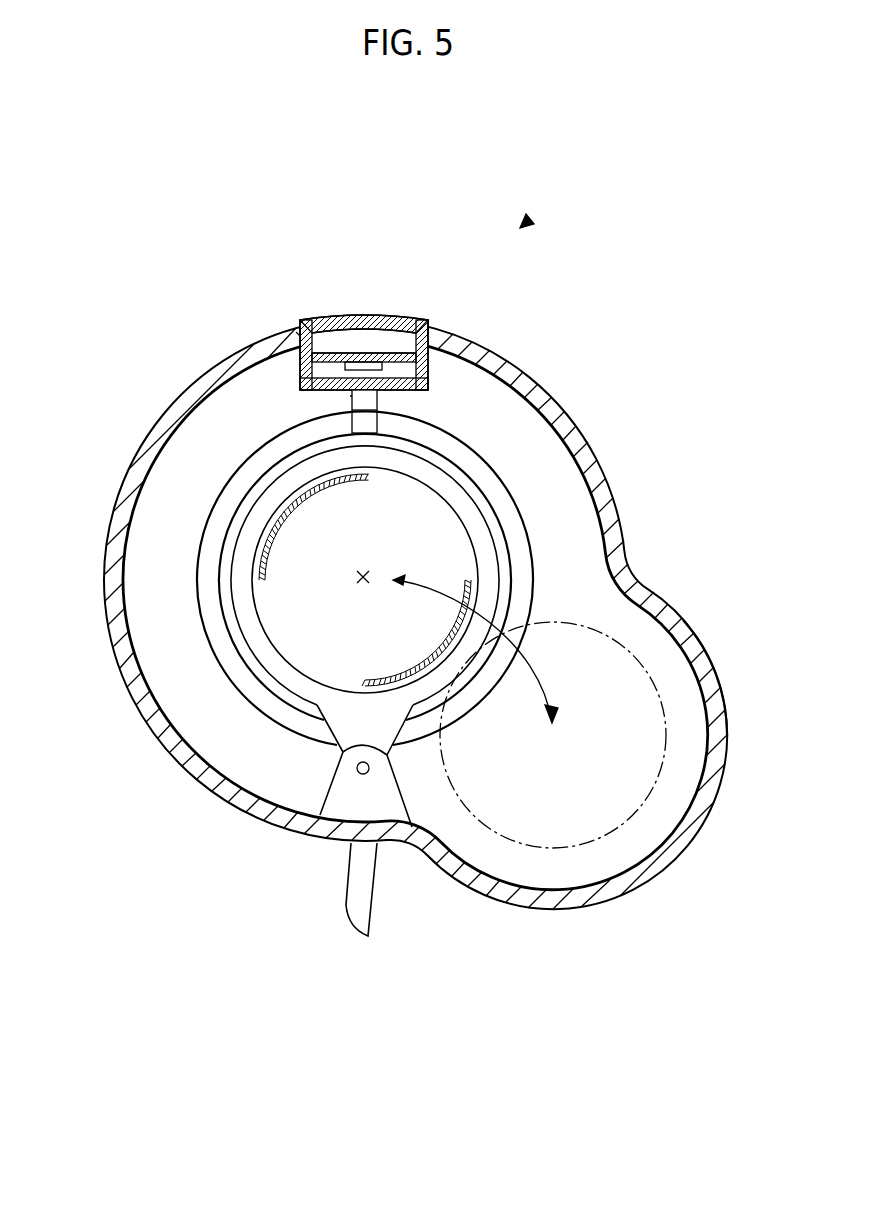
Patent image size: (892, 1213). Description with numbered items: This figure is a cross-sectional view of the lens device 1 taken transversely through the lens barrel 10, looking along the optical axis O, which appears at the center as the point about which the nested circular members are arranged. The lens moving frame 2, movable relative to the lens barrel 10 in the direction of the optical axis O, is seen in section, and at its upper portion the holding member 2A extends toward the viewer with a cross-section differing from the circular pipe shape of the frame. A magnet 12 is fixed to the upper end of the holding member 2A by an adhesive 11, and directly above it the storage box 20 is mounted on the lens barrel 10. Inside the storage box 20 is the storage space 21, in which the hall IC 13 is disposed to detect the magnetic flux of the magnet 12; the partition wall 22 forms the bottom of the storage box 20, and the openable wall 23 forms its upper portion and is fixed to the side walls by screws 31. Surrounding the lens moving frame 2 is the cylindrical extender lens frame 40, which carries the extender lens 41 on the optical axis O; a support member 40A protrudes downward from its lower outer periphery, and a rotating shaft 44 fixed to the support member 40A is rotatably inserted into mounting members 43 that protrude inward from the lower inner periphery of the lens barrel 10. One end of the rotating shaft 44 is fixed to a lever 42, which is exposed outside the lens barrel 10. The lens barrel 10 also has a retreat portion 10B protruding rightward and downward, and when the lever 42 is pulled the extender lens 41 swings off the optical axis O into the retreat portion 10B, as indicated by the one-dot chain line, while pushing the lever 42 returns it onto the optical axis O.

The lens device 1 is at (522, 225).
The lens moving frame 2 is at (480, 472).
The holding member 2A is at (360, 432).
The lens barrel 10 is at (163, 407).
The retreat portion 10B is at (688, 623).
The adhesive 11 is at (385, 400).
The magnet 12 is at (350, 396).
The hall IC 13 is at (298, 332).
The storage box 20 is at (399, 321).
The storage space 21 is at (351, 342).
The partition wall 22 is at (430, 390).
The openable wall 23 is at (370, 320).
The screws 31 is at (302, 318).
The extender lens frame 40 is at (484, 582).
The support member 40A is at (335, 748).
The extender lens 41 is at (440, 547).
The lever 42 is at (360, 892).
The mounting members 43 is at (338, 797).
The rotating shaft 44 is at (369, 773).
The optical axis O is at (360, 580).